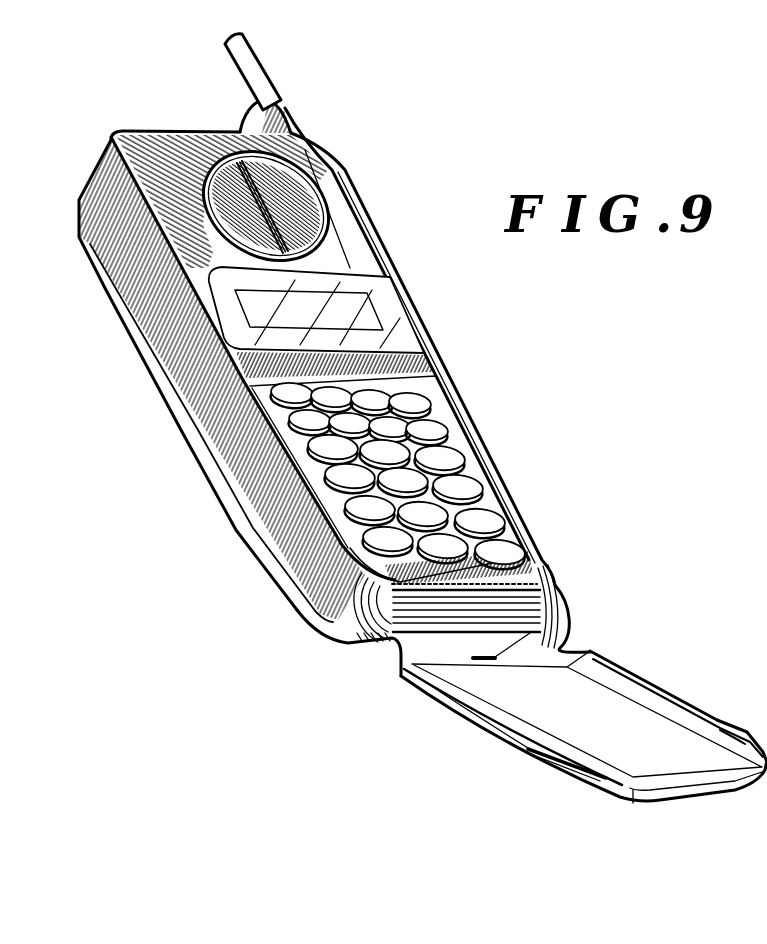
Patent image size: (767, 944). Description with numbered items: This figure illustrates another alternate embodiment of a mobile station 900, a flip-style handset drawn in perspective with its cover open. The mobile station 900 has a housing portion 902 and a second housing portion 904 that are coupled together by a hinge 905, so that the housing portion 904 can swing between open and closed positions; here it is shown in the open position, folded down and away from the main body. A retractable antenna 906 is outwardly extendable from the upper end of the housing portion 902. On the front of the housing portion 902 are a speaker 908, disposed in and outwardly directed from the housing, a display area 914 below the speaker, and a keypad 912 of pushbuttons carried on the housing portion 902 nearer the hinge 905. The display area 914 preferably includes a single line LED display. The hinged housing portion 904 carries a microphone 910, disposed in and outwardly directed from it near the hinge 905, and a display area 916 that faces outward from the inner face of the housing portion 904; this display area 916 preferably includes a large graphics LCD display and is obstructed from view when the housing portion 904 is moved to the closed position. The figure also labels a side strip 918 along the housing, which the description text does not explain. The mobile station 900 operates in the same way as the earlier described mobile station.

The mobile station 900 is at (121, 131).
The housing portion 902 is at (78, 222).
The housing portion 904 is at (617, 790).
The hinge 905 is at (500, 613).
The retractable antenna 906 is at (250, 72).
The speaker 908 is at (268, 212).
The microphone 910 is at (552, 644).
The keypad 912 is at (450, 456).
The display area 914 is at (360, 313).
The display area 916 is at (612, 712).
The battery pack 918 is at (175, 389).